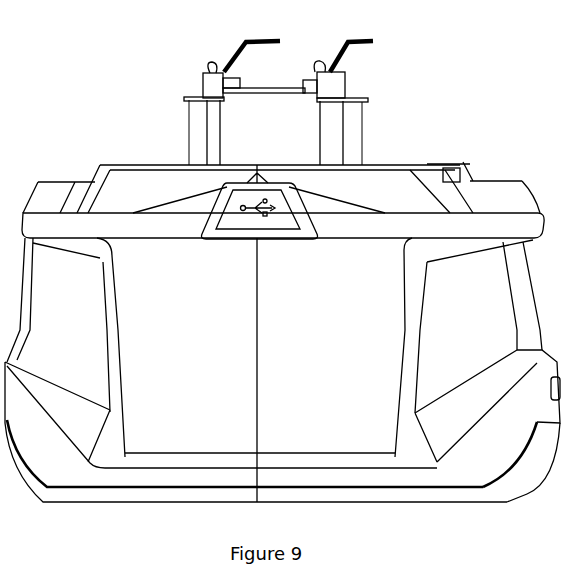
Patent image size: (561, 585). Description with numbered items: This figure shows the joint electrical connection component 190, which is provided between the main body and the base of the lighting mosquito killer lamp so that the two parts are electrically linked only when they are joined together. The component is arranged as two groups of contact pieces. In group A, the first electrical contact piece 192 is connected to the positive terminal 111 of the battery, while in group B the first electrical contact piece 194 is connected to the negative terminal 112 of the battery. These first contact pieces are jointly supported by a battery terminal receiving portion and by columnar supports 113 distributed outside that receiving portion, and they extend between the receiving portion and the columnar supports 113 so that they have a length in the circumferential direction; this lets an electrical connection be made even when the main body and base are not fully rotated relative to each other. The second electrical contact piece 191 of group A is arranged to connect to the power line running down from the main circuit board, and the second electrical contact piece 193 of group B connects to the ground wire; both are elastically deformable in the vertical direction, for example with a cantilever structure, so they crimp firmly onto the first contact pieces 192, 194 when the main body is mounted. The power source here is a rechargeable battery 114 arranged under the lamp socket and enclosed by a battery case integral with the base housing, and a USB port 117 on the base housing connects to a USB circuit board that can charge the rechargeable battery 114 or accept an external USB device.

The joint electrical connection component 190 is at (58, 25).
The second electrical contact piece 191 is at (237, 52).
The first electrical contact piece 192 is at (200, 86).
The second electrical contact piece 193 is at (347, 50).
The first electrical contact piece 194 is at (347, 85).
The columnar supports 113 is at (196, 115).
The positive terminal 111 is at (210, 108).
The negative terminal 112 is at (325, 102).
The rechargeable battery 114 is at (240, 127).
The USB port 117 is at (242, 215).